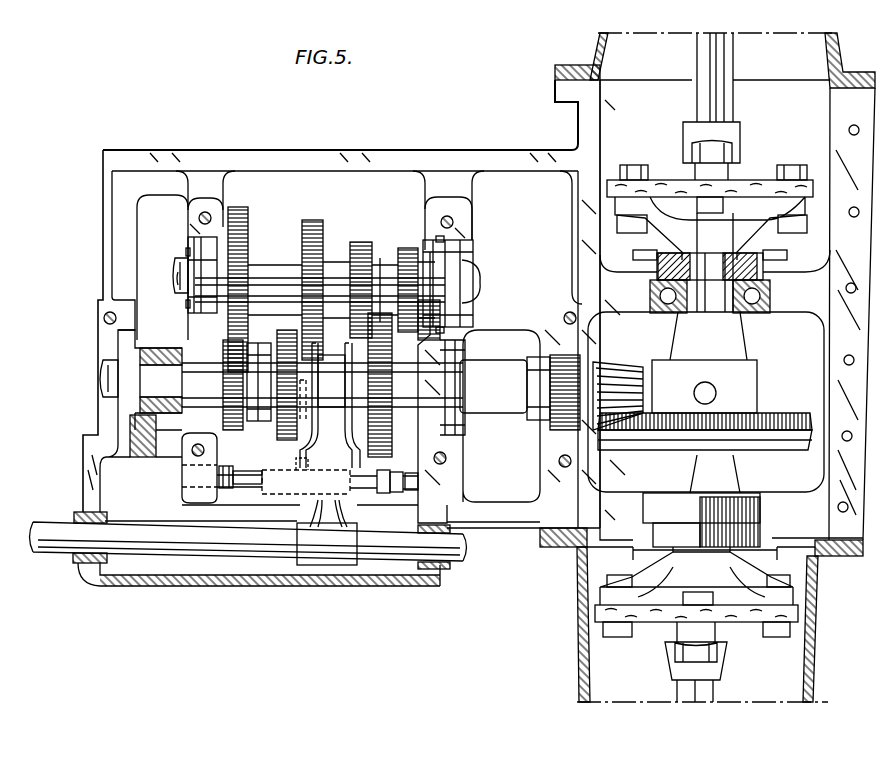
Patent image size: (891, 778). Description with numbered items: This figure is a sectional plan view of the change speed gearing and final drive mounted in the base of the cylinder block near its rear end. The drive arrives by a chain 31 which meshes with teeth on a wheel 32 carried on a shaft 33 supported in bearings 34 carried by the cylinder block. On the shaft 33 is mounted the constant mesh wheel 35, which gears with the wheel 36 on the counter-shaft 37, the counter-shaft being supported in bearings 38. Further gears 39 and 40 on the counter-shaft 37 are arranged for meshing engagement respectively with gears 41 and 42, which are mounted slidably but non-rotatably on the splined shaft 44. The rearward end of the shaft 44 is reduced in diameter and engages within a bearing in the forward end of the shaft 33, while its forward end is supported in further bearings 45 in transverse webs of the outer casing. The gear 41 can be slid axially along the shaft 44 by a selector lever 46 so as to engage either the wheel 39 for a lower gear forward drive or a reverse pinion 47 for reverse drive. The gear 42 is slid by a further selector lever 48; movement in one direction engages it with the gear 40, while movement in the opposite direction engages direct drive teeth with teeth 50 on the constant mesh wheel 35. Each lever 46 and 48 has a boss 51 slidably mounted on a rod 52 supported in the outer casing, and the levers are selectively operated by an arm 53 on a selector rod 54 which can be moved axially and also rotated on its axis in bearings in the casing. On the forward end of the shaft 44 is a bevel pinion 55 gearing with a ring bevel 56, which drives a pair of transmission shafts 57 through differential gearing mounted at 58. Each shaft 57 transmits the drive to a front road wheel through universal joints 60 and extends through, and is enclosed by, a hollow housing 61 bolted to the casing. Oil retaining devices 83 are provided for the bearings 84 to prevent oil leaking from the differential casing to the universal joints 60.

The chain 31 is at (128, 452).
The wheel 32 is at (100, 430).
The shaft 33 is at (150, 380).
The bearings 34 is at (125, 372).
The constant mesh wheel 35 is at (235, 393).
The wheel 36 is at (248, 228).
The counter-shaft 37 is at (384, 272).
The bearings 38 is at (210, 262).
The gear 39 is at (364, 241).
The gear 40 is at (322, 223).
The gear 41 is at (391, 385).
The gear 42 is at (284, 432).
The splined shaft 44 is at (483, 387).
The bearings 45 is at (570, 355).
The selector lever 46 is at (350, 445).
The reverse pinion 47 is at (420, 318).
The selector lever 48 is at (296, 482).
The teeth 50 is at (258, 345).
The boss 51 is at (272, 485).
The rod 52 is at (236, 490).
The arm 53 is at (340, 506).
The selector rod 54 is at (248, 554).
The bevel pinion 55 is at (620, 370).
The ring bevel 56 is at (772, 427).
The transmission shafts 57 is at (735, 253).
The differential gearing 58 is at (704, 386).
The universal joints 60 is at (680, 190).
The hollow housing 61 is at (825, 55).
The oil retaining devices 83 is at (665, 258).
The bearings 84 is at (745, 308).